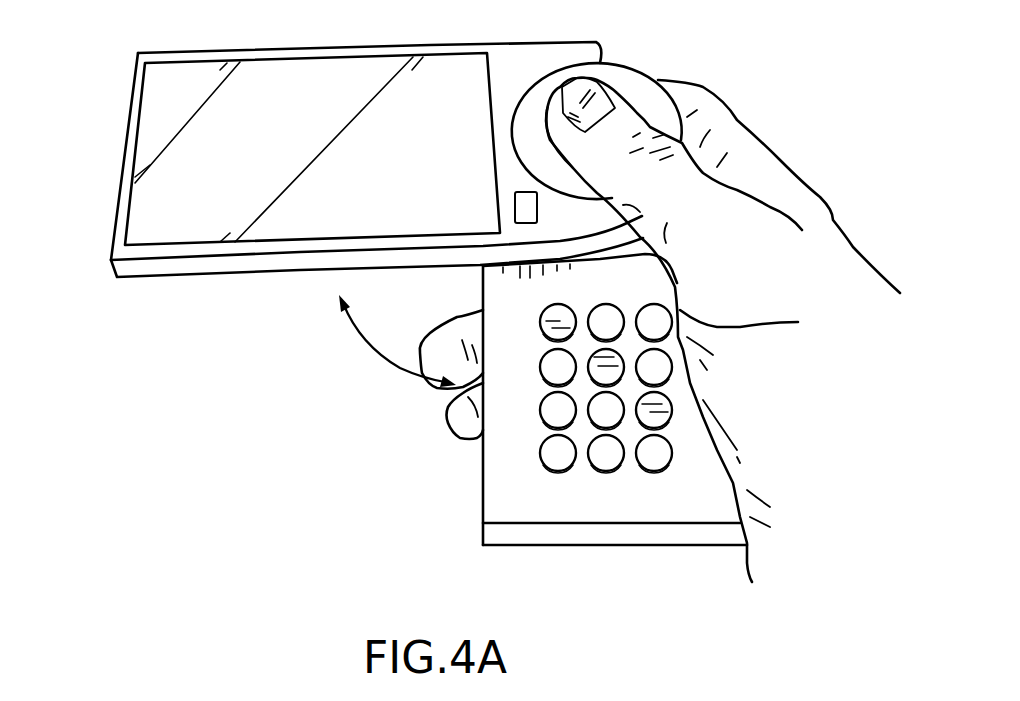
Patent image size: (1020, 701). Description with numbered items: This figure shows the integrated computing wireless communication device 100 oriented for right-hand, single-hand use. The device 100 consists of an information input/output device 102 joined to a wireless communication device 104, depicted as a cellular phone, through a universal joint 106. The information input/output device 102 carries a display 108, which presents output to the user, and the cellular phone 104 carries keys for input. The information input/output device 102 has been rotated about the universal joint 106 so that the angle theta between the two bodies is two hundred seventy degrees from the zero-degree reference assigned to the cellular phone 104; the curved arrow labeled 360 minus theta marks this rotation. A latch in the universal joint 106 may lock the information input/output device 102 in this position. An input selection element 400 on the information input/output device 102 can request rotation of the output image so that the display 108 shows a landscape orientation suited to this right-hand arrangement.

The integrated computing wireless communication device 100 is at (340, 434).
The information input/output device 102 is at (167, 277).
The wireless communication device 104 is at (483, 503).
The universal joint 106 is at (600, 63).
The display 108 is at (137, 143).
The input selection element 400 is at (518, 225).
The rotation angle 360-theta 360 is at (366, 336).